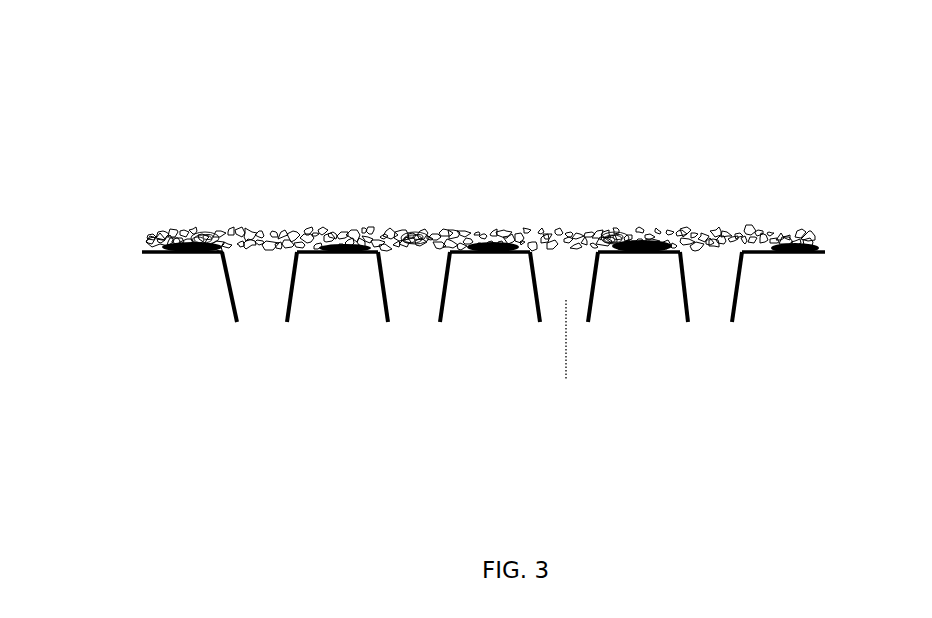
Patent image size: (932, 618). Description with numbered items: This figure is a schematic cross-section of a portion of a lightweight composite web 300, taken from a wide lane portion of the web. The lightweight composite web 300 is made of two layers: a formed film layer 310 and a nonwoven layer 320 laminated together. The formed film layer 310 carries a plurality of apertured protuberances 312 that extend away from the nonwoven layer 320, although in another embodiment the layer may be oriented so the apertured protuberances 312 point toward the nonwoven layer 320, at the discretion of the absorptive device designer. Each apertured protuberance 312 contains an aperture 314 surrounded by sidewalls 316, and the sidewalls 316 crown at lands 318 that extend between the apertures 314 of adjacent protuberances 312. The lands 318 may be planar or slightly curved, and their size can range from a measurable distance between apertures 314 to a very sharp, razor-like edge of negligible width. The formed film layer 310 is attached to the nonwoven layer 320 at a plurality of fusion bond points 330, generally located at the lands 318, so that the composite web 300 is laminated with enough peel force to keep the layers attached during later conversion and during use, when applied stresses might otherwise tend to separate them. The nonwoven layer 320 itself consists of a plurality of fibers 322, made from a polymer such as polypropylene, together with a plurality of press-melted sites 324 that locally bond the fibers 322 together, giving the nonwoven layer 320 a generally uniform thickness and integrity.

The lightweight composite web 300 is at (190, 118).
The formed film layer 310 is at (145, 255).
The apertured protuberances 312 is at (237, 335).
The aperture 314 is at (562, 357).
The sidewalls 316 is at (535, 310).
The lands 318 is at (752, 255).
The nonwoven layer 320 is at (158, 232).
The fibers 322 is at (274, 228).
The press-melted sites 324 is at (212, 240).
The fusion bond points 330 is at (187, 254).